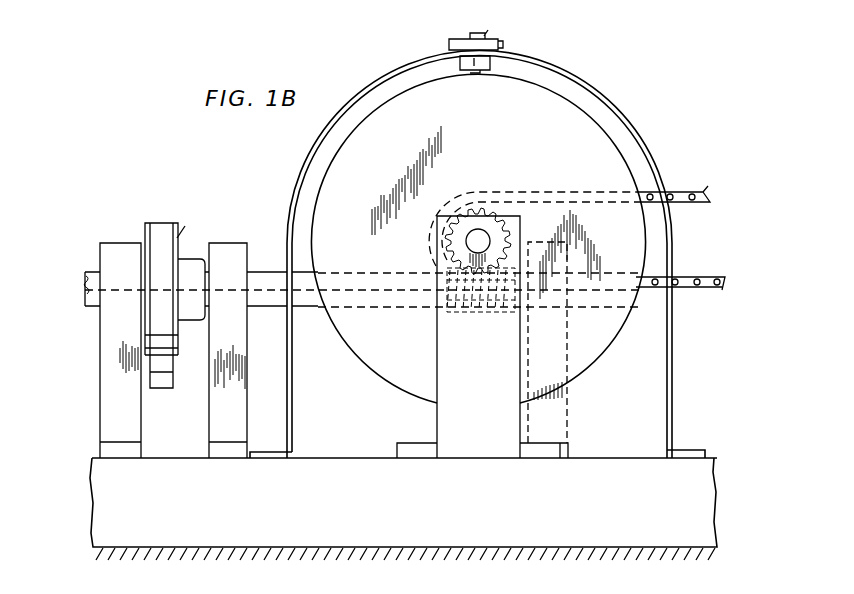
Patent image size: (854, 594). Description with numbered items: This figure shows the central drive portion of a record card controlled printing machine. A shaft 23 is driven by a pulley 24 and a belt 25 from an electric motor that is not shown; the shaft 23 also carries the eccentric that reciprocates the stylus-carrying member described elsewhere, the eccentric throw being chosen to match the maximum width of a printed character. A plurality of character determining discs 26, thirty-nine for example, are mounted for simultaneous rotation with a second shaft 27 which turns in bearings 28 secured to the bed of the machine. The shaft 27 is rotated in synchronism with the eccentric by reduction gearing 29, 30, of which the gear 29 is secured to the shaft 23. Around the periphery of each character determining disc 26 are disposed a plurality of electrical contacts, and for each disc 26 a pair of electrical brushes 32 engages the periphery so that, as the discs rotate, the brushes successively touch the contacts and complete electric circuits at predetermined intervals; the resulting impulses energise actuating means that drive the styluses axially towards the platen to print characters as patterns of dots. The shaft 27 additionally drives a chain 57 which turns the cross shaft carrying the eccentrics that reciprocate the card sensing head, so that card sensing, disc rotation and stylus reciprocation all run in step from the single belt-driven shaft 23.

The shaft 23 is at (260, 283).
The pulley 24 is at (175, 282).
The belt 25 is at (167, 385).
The character determining disc 26 is at (582, 350).
The shaft 27 is at (478, 241).
The bearings 28 is at (453, 419).
The gear 29 is at (477, 312).
The reduction gearing 30 is at (519, 227).
The electrical brushes 32 is at (480, 37).
The chain 57 is at (704, 278).